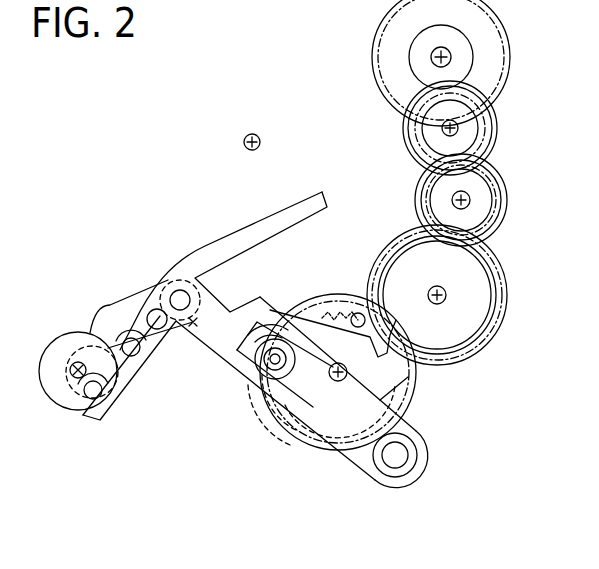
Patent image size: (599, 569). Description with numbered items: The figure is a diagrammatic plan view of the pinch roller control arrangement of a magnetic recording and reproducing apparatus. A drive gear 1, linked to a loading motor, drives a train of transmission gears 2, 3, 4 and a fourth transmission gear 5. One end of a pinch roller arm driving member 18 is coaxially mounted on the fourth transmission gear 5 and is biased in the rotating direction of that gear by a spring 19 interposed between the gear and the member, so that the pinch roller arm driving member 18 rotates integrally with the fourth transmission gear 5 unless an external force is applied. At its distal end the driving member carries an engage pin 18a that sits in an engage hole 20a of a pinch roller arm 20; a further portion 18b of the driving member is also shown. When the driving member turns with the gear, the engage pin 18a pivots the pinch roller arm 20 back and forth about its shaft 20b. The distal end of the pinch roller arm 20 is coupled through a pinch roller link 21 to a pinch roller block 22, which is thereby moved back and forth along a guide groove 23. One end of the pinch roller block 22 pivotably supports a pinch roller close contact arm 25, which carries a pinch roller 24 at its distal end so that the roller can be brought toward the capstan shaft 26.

The drive gear 1 is at (506, 52).
The transmission gear 2 is at (493, 132).
The transmission gear 3 is at (497, 197).
The transmission gear 4 is at (496, 308).
The fourth transmission gear 5 is at (407, 400).
The pinch roller arm driving member 18 is at (397, 373).
The engage pin 18a is at (268, 392).
The toothed portion 18b is at (284, 420).
The spring 19 is at (313, 316).
The pinch roller arm 20 is at (370, 471).
The engage hole 20a is at (245, 362).
The shaft 20b is at (400, 458).
The pinch roller link 21 is at (192, 326).
The pinch roller block 22 is at (120, 390).
The guide groove 23 is at (233, 240).
The pinch roller 24 is at (58, 350).
The pinch roller close contact arm 25 is at (108, 322).
The capstan shaft 26 is at (244, 142).